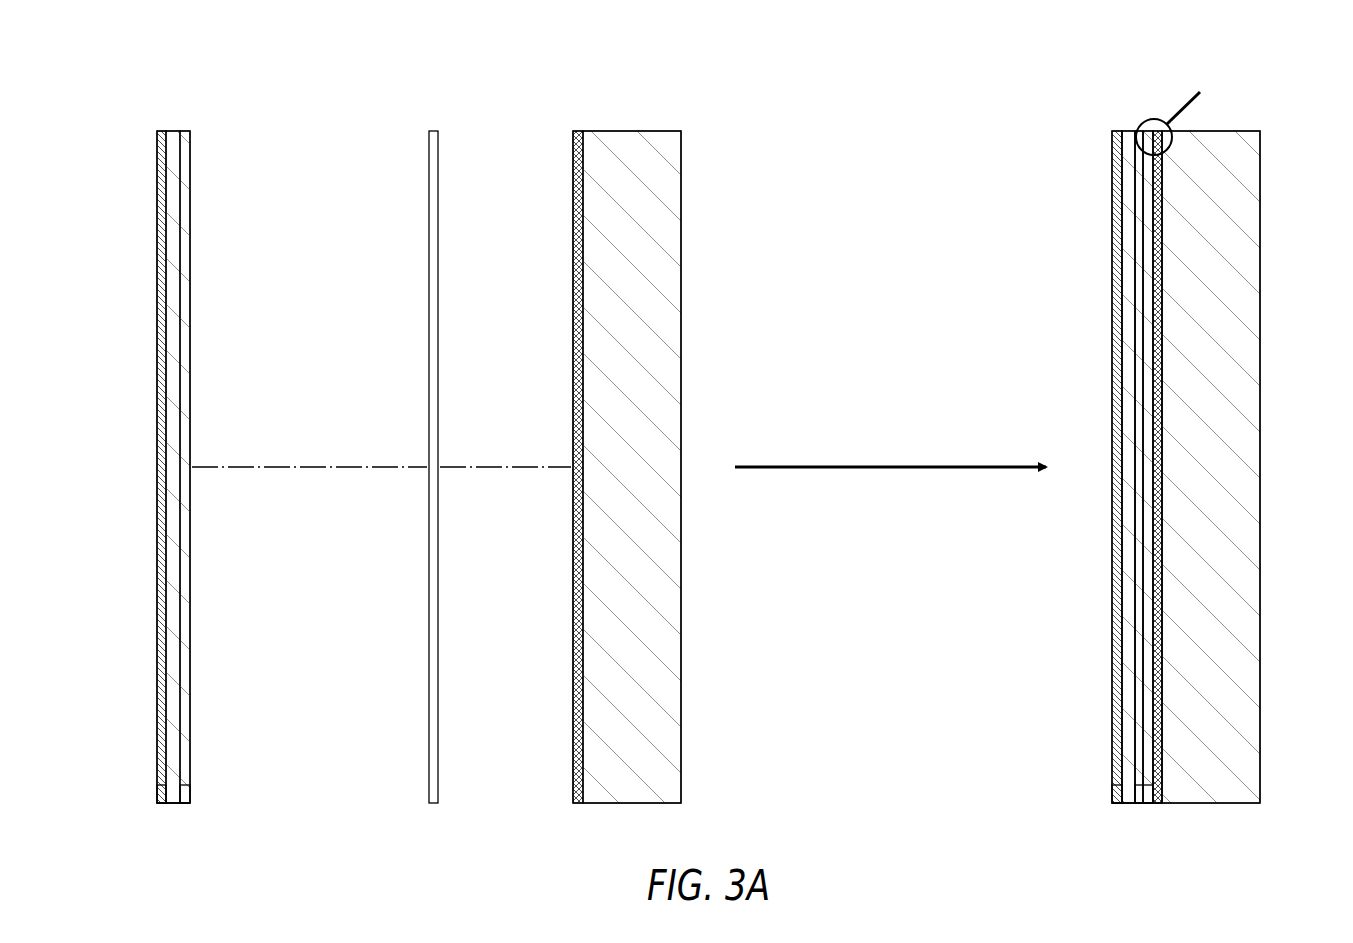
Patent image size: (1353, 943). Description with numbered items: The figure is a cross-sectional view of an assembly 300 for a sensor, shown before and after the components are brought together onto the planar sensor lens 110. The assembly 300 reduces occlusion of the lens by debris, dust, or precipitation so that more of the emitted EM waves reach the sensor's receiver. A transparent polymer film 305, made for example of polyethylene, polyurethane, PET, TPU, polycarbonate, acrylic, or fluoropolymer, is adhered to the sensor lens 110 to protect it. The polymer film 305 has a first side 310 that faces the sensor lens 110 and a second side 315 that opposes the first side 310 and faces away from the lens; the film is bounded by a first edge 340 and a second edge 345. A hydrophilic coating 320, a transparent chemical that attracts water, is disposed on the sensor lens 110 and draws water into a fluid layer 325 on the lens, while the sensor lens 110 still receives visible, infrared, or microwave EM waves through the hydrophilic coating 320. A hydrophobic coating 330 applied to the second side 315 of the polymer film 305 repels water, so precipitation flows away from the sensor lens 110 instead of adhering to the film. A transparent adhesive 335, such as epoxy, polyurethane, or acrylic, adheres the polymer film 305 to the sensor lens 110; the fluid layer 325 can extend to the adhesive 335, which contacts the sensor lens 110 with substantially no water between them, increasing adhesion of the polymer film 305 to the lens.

The assembly 300 is at (90, 102).
The polymer film 305 is at (167, 131).
The first side 310 is at (187, 788).
The second side 315 is at (158, 788).
The hydrophilic coating 320 is at (573, 245).
The fluid layer 325 is at (429, 243).
The hydrophobic coating 330 is at (157, 243).
The adhesive 335 is at (190, 350).
The first edge 340 is at (181, 131).
The second edge 345 is at (171, 804).
The sensor lens 110 is at (681, 185).